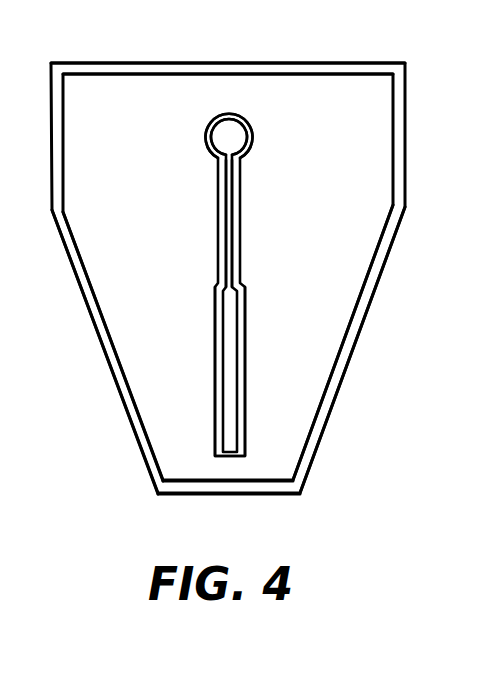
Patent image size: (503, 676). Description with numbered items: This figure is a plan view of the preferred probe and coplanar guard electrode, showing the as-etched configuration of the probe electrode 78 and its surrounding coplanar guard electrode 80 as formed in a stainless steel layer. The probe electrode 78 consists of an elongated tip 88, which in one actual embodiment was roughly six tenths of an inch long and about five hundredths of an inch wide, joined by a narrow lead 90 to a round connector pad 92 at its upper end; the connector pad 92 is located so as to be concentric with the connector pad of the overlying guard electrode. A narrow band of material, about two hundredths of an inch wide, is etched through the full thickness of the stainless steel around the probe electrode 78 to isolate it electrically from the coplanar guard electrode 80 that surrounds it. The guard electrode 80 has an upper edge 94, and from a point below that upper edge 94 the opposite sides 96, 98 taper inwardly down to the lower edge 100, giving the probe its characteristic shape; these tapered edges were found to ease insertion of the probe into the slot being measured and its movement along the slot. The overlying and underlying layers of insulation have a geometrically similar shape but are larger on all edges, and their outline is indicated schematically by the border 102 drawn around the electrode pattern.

The probe electrode 78 is at (214, 373).
The coplanar guard electrode 80 is at (138, 345).
The tip 88 is at (230, 390).
The lead 90 is at (230, 240).
The connector pad 92 is at (238, 143).
The upper edge 94 is at (243, 73).
The side 96 is at (355, 313).
The side 98 is at (134, 426).
The lower edge 100 is at (265, 482).
The border 102 is at (333, 385).